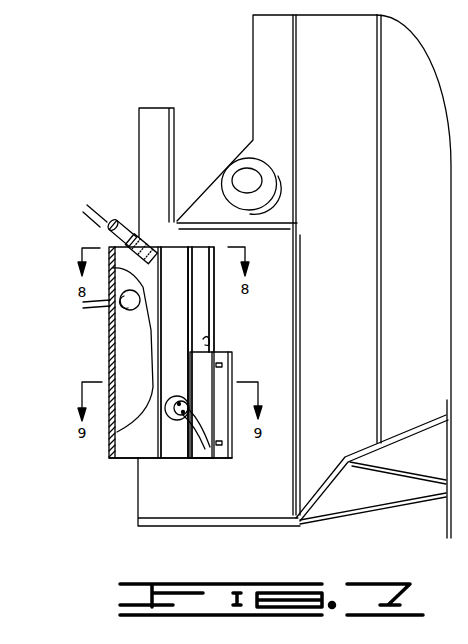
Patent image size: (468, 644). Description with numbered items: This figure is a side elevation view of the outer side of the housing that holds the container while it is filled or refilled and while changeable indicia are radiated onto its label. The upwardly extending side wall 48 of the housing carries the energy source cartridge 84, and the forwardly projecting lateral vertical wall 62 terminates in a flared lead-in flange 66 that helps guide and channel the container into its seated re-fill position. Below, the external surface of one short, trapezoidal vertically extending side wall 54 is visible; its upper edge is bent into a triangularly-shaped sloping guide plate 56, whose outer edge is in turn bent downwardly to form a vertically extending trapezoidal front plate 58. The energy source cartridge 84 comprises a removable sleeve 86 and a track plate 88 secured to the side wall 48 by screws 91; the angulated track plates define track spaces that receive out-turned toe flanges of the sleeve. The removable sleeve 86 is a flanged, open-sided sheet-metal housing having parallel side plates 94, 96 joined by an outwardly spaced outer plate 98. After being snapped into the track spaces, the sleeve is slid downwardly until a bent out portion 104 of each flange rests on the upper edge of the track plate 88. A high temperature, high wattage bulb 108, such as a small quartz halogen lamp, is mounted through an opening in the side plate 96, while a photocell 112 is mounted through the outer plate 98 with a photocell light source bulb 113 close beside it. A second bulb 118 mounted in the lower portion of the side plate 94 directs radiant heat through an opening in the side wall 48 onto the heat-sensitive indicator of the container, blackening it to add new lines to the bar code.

The side wall 48 is at (272, 500).
The vertically extending side wall 54 is at (343, 497).
The sloping guide plate 56 is at (425, 442).
The front plate 58 is at (445, 505).
The lateral vertical wall 62 is at (318, 104).
The lead-in flange 66 is at (402, 149).
The energy source cartridge 84 is at (123, 468).
The removable sleeve 86 is at (235, 352).
The track plate 88 is at (222, 377).
The screw 91 is at (222, 450).
The side plate 94 is at (187, 375).
The side plate 96 is at (128, 352).
The outer plate 98 is at (147, 452).
The bent out portion 104 is at (205, 345).
The electrically energized bulb 108 is at (110, 318).
The photocell 112 is at (112, 245).
The photocell light source bulb 113 is at (142, 202).
The second bulb 118 is at (166, 420).